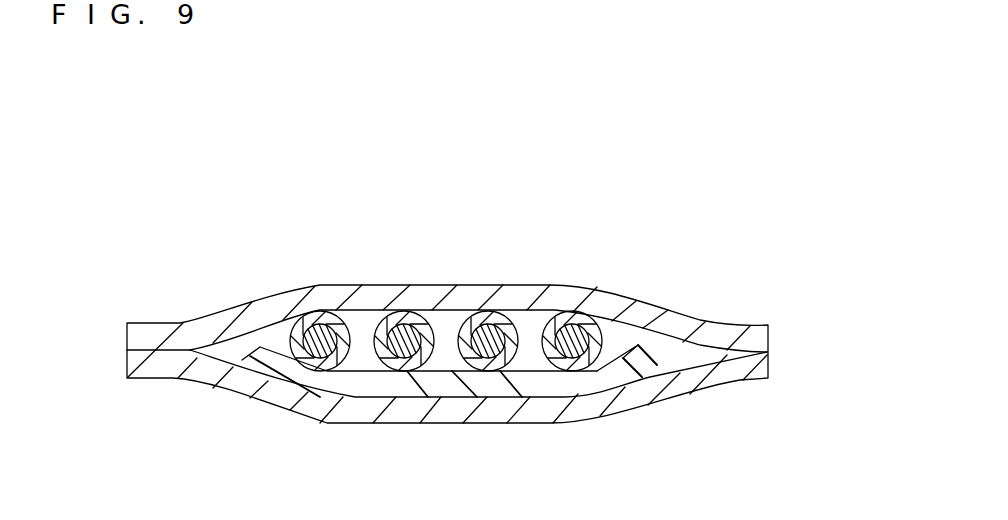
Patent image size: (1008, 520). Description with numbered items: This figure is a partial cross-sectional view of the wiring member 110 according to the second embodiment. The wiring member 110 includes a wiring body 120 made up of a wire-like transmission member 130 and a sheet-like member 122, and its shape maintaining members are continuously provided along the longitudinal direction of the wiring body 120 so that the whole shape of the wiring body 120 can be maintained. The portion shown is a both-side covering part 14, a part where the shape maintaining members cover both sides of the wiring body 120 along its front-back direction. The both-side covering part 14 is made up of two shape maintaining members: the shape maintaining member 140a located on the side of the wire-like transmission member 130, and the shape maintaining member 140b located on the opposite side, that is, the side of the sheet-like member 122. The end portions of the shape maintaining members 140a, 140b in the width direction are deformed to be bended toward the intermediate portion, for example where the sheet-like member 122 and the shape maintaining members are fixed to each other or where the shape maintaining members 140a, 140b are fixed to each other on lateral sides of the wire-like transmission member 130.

The wiring member 110 is at (168, 160).
The both-side covering part 14 is at (248, 289).
The wire-like transmission member 130 is at (462, 322).
The shape maintaining member 140a is at (530, 300).
The shape maintaining member 140b is at (541, 410).
The wiring body 120 is at (612, 338).
The sheet-like member 122 is at (446, 392).